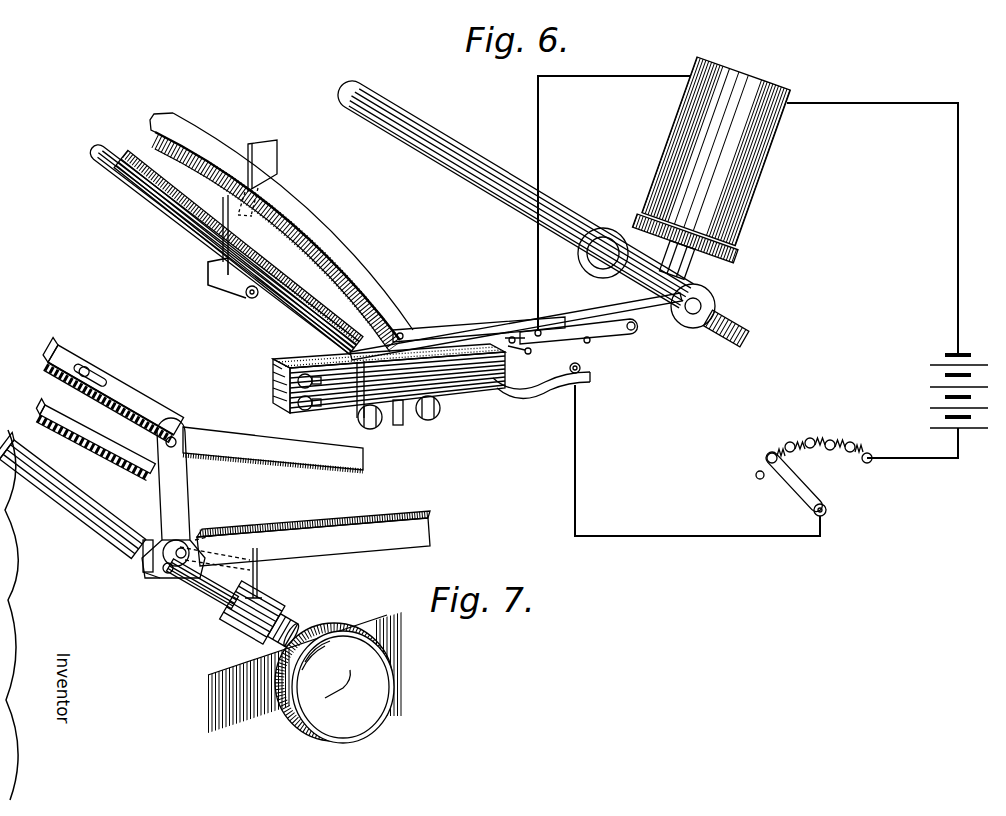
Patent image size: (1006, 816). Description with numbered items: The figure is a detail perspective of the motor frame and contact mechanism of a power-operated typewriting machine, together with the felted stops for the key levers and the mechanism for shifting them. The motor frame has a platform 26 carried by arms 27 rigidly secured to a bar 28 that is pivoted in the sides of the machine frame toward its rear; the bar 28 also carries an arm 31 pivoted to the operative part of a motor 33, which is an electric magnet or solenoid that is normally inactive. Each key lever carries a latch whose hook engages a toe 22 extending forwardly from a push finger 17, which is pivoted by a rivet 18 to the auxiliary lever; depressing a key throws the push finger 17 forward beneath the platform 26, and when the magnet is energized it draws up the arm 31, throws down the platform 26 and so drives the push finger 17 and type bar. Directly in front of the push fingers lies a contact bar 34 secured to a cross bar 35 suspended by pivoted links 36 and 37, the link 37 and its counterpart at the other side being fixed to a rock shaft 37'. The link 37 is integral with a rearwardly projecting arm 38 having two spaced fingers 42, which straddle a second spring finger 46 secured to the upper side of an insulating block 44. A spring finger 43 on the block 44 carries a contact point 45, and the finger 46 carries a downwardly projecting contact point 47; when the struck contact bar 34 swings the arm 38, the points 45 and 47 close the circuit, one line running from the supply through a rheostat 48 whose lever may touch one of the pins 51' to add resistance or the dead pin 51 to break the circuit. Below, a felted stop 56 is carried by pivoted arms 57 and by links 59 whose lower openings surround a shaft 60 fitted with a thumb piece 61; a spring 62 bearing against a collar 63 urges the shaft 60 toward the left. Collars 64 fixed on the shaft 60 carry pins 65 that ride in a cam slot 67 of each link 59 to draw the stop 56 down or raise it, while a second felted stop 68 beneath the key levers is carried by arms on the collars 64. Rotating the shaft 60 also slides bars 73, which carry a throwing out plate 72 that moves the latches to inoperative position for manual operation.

In FIG. 6, the push finger 17 is at (248, 218).
In FIG. 6, the rivet 18 is at (246, 297).
In FIG. 6, the toe 22 is at (208, 269).
In FIG. 6, the platform 26 is at (353, 268).
In FIG. 6, the arms 27 is at (645, 320).
In FIG. 6, the bar 28 is at (562, 220).
In FIG. 6, the arm 31 is at (688, 270).
In FIG. 6, the motor 33 is at (757, 187).
In FIG. 6, the contact bar 34 is at (310, 327).
In FIG. 6, the cross bar 35 is at (380, 420).
In FIG. 6, the pivoted link 36 is at (430, 420).
In FIG. 6, the link 37 is at (366, 399).
In FIG. 6, the rock shaft 37' is at (217, 248).
In FIG. 6, the arm 38 is at (453, 325).
In FIG. 6, the spaced fingers 42 is at (530, 346).
In FIG. 6, the spring finger 43 is at (541, 390).
In FIG. 6, the block 44 is at (462, 380).
In FIG. 6, the contact point 45 is at (580, 367).
In FIG. 6, the second spring finger 46 is at (560, 328).
In FIG. 6, the contact point 47 is at (590, 342).
In FIG. 6, the rheostat 48 is at (868, 465).
In FIG. 6, the dead pin 51 is at (776, 473).
In FIG. 6, the pins 51' is at (820, 429).
In FIG. 7, the felted stop 56 is at (122, 393).
In FIG. 7, the arms 57 is at (315, 455).
In FIG. 7, the links 59 is at (175, 480).
In FIG. 7, the shaft 60 is at (207, 593).
In FIG. 7, the thumb piece 61 is at (378, 680).
In FIG. 7, the spring 62 is at (290, 632).
In FIG. 7, the collar 63 is at (262, 606).
In FIG. 7, the disks or collars 64 is at (145, 562).
In FIG. 7, the pins 65 is at (168, 562).
In FIG. 7, the cam slot 67 is at (167, 573).
In FIG. 7, the second felted stop 68 is at (131, 458).
In FIG. 7, the throwing out plate 72 is at (258, 573).
In FIG. 7, the sliding bars 73 is at (377, 538).